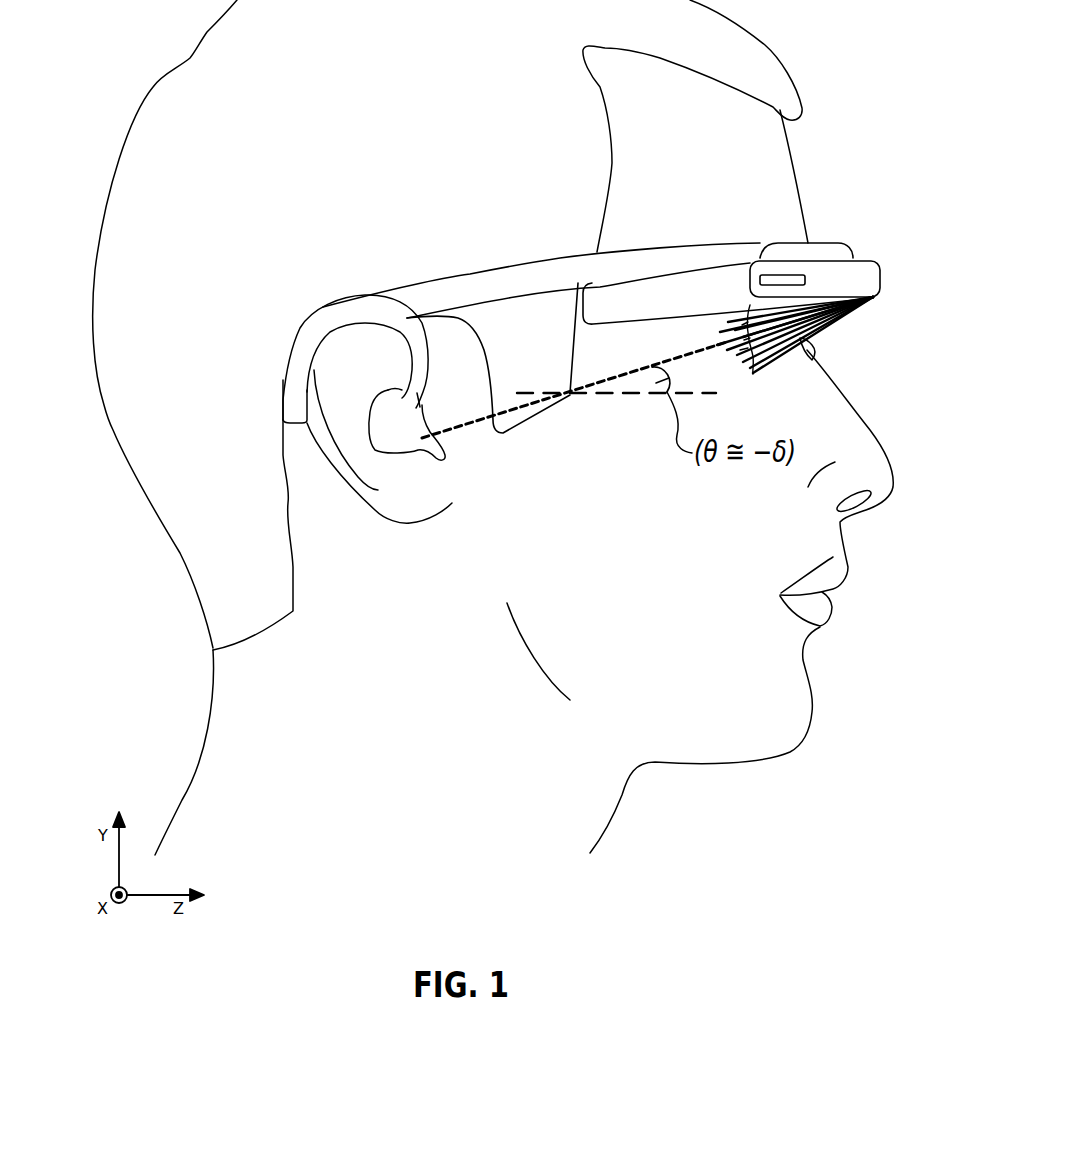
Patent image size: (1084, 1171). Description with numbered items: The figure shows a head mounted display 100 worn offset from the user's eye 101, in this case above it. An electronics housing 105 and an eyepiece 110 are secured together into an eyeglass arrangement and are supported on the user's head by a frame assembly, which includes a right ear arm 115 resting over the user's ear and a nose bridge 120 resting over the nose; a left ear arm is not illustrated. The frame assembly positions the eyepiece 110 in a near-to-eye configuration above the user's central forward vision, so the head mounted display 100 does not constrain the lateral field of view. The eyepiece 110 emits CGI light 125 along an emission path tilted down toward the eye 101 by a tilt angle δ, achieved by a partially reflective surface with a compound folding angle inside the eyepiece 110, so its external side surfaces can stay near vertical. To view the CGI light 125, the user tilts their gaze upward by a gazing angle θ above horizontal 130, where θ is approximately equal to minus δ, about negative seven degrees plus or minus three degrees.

The head mounted display 100 is at (625, 288).
The eye 101 is at (733, 353).
The electronics housing 105 is at (728, 303).
The eyepiece 110 is at (873, 266).
The right ear arm 115 is at (491, 272).
The nose bridge 120 is at (818, 350).
The CGI light 125 is at (832, 317).
The horizontal 130 is at (635, 395).